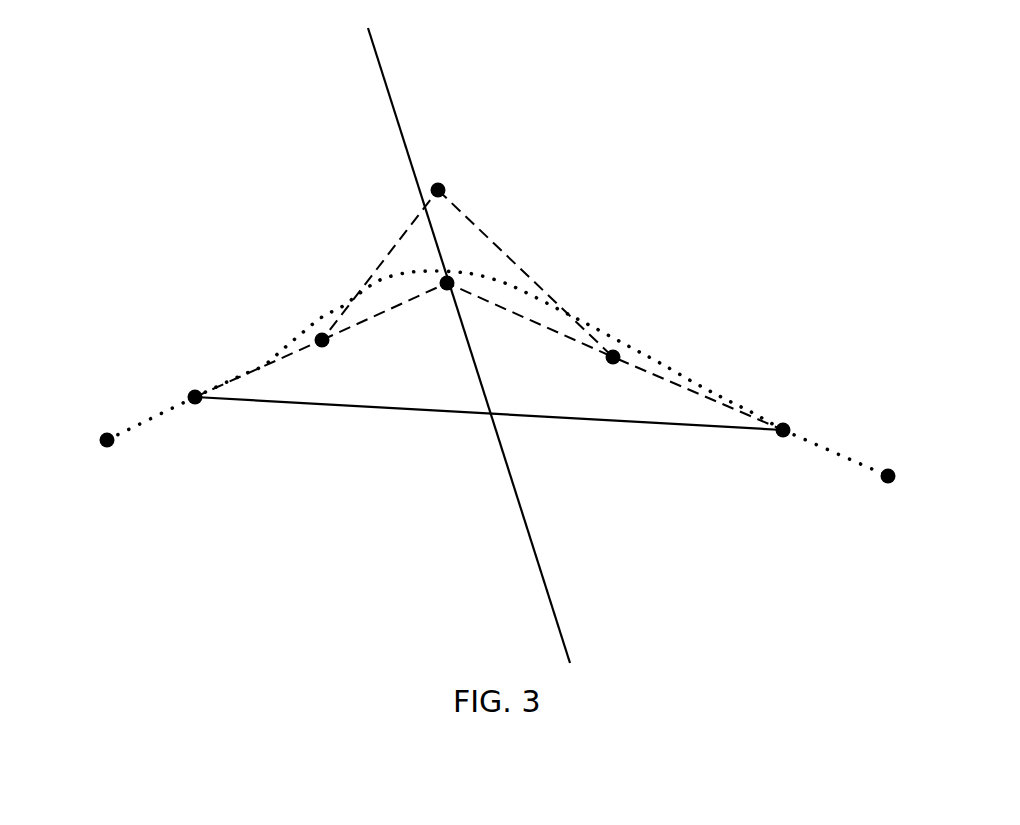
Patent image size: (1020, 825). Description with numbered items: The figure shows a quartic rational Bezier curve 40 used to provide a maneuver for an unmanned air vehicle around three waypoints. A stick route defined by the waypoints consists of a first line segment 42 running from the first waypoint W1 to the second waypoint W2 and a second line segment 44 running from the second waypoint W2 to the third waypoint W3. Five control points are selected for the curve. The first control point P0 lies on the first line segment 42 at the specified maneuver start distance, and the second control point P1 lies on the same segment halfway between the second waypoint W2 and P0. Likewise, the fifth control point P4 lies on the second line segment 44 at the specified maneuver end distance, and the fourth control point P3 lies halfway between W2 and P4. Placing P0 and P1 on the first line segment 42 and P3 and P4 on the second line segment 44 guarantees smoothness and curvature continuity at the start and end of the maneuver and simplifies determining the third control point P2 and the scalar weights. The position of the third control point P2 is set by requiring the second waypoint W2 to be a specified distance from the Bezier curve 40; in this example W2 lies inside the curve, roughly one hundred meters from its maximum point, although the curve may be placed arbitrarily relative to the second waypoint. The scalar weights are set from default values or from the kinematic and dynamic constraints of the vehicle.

The quartic rational Bezier curve 40 is at (666, 364).
The first line segment 42 is at (293, 352).
The second line segment 44 is at (640, 370).
The first waypoint W1 is at (106, 453).
The second waypoint W2 is at (436, 299).
The third waypoint W3 is at (886, 492).
The first control point P0 is at (193, 387).
The second control point P1 is at (341, 346).
The third control point P2 is at (437, 180).
The fourth control point P3 is at (601, 365).
The fifth control point P4 is at (780, 446).